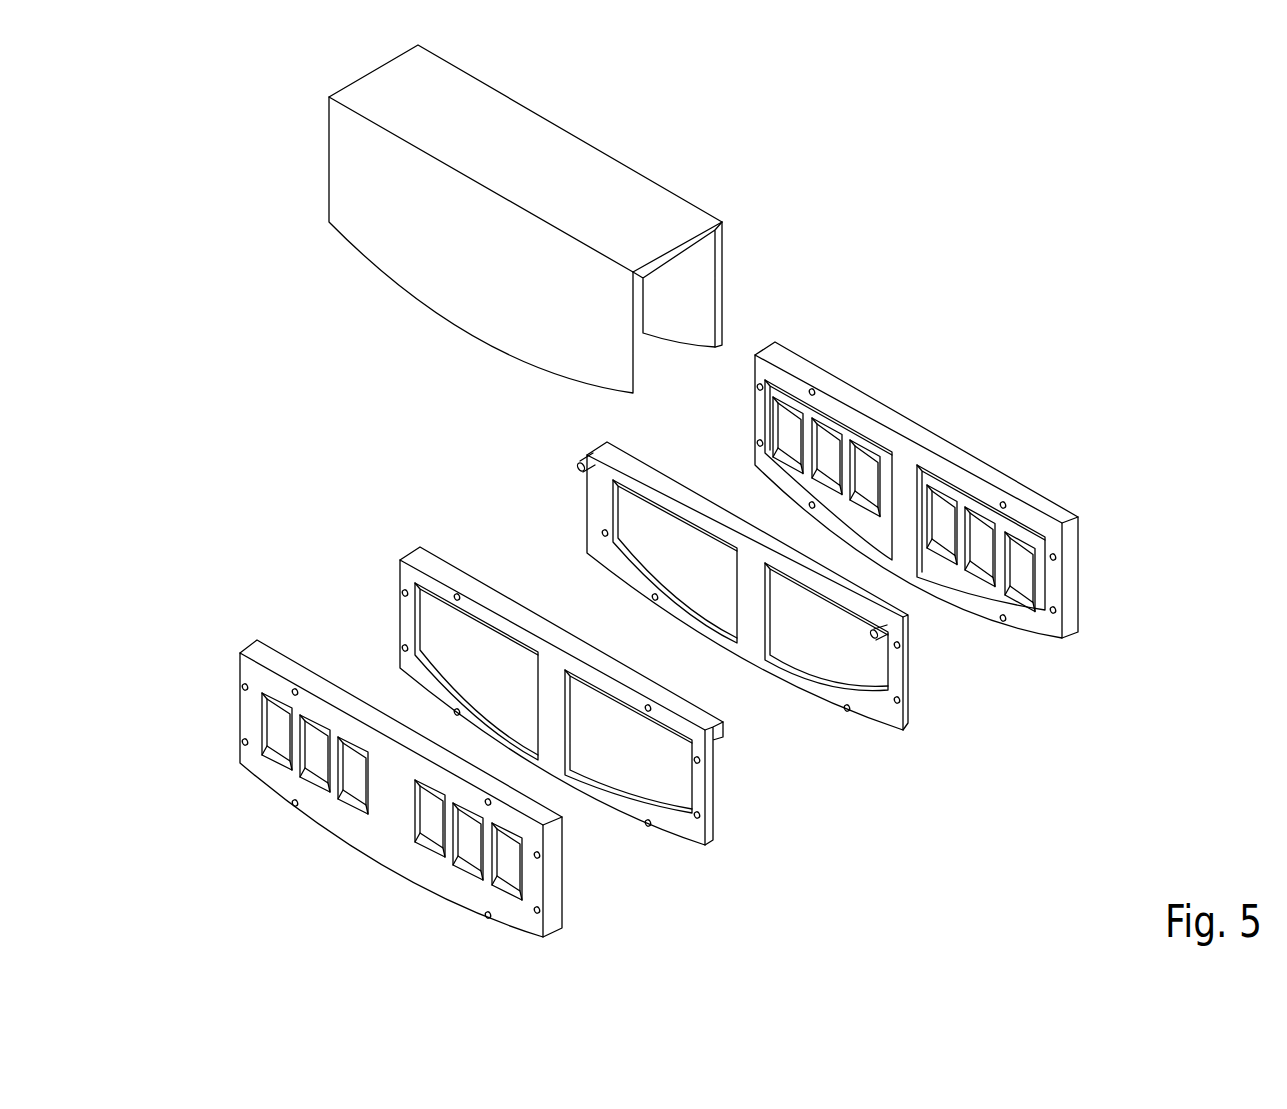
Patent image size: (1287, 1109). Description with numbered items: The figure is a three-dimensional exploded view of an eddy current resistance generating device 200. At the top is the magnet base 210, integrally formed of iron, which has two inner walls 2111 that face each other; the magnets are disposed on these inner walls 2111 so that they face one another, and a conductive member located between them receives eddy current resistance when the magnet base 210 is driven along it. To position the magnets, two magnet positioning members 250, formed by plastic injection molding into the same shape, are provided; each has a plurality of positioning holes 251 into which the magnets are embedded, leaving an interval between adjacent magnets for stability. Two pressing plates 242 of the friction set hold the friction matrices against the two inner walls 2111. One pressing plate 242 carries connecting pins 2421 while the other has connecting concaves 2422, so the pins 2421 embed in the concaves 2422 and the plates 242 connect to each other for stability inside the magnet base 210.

The eddy current resistance generating device 200 is at (190, 79).
The magnet base 210 is at (605, 219).
The inner walls 2111 is at (700, 300).
The pressing plates 242 is at (692, 684).
The connecting pins 2421 is at (883, 637).
The connecting concaves 2422 is at (722, 714).
The magnet positioning members 250 is at (659, 653).
The positioning holes 251 is at (1020, 592).